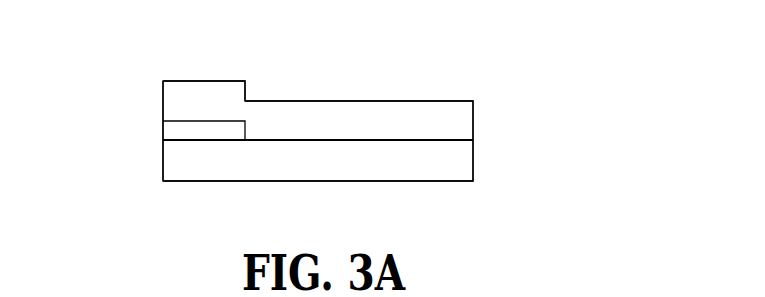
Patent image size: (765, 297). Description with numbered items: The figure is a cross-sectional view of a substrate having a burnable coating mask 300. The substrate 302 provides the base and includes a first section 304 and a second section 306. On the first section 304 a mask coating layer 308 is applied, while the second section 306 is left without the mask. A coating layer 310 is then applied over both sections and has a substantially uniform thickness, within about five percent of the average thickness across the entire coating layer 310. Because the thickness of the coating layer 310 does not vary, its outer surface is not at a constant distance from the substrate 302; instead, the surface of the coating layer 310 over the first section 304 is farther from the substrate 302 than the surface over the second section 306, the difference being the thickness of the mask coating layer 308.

The substrate having a burnable coating mask 300 is at (540, 63).
The substrate 302 is at (456, 168).
The first section 304 is at (174, 140).
The second section 306 is at (456, 139).
The mask coating layer 308 is at (197, 125).
The coating layer 310 is at (461, 115).